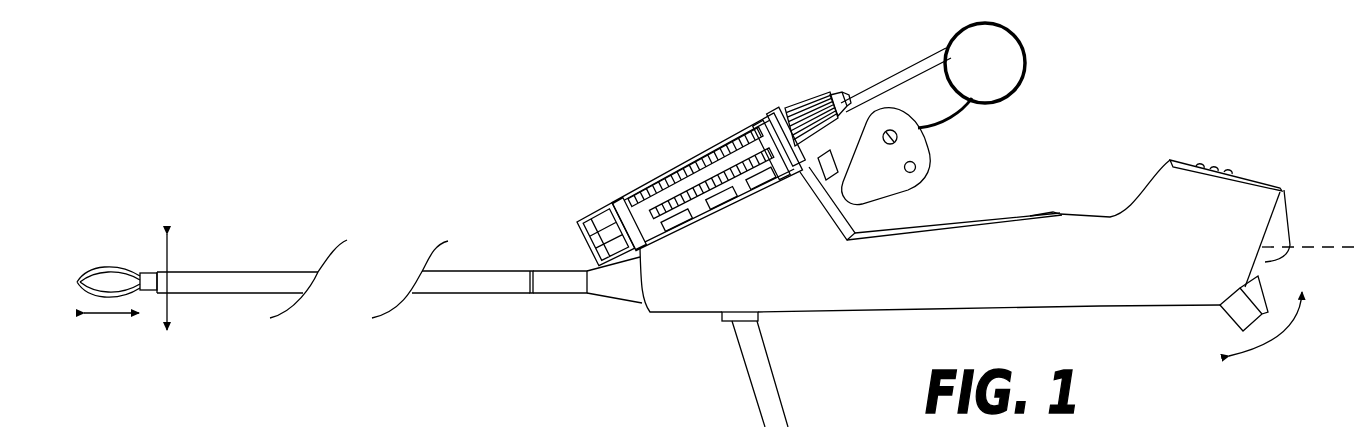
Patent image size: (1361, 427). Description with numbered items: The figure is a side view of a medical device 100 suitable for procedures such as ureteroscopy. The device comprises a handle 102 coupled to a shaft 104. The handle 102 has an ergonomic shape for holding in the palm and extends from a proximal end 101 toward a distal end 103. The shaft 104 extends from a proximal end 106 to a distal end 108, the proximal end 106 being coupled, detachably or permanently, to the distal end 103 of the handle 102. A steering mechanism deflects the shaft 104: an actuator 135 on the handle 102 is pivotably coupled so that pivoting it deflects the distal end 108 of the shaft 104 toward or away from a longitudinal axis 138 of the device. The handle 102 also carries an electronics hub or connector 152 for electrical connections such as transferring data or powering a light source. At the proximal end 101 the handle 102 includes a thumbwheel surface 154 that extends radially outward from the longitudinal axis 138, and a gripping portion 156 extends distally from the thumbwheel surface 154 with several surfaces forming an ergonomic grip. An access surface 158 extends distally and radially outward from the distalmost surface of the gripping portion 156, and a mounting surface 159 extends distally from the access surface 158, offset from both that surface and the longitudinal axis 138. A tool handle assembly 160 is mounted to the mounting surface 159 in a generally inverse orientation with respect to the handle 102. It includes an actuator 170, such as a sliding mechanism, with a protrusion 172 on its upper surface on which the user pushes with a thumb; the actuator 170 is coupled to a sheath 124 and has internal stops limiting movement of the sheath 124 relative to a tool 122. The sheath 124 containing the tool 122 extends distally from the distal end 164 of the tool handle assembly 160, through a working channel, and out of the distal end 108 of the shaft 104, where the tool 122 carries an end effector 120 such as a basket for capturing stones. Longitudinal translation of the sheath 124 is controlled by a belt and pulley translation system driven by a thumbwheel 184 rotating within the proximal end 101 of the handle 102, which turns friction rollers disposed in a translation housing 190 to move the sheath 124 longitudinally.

The medical device 100 is at (290, 133).
The proximal end 101 is at (1262, 262).
The handle 102 is at (1232, 238).
The distal end 103 is at (553, 284).
The shaft 104 is at (435, 283).
The proximal end 106 is at (517, 278).
The distal end 108 is at (176, 270).
The end effector 120 is at (118, 262).
The tool 122 is at (153, 218).
The sheath 124 is at (146, 272).
The actuator 135 is at (1233, 320).
The longitudinal axis 138 is at (1312, 250).
The electronics hub or connector 152 is at (763, 382).
The thumbwheel surface 154 is at (1265, 190).
The gripping portion 156 is at (1110, 214).
The access surface 158 is at (857, 218).
The mounting surface 159 is at (819, 108).
The tool handle assembly 160 is at (607, 148).
The distal end 164 is at (781, 88).
The actuator 170 is at (677, 165).
The protrusion 172 is at (740, 128).
The thumbwheel 184 is at (1203, 165).
The translation housing 190 is at (935, 165).